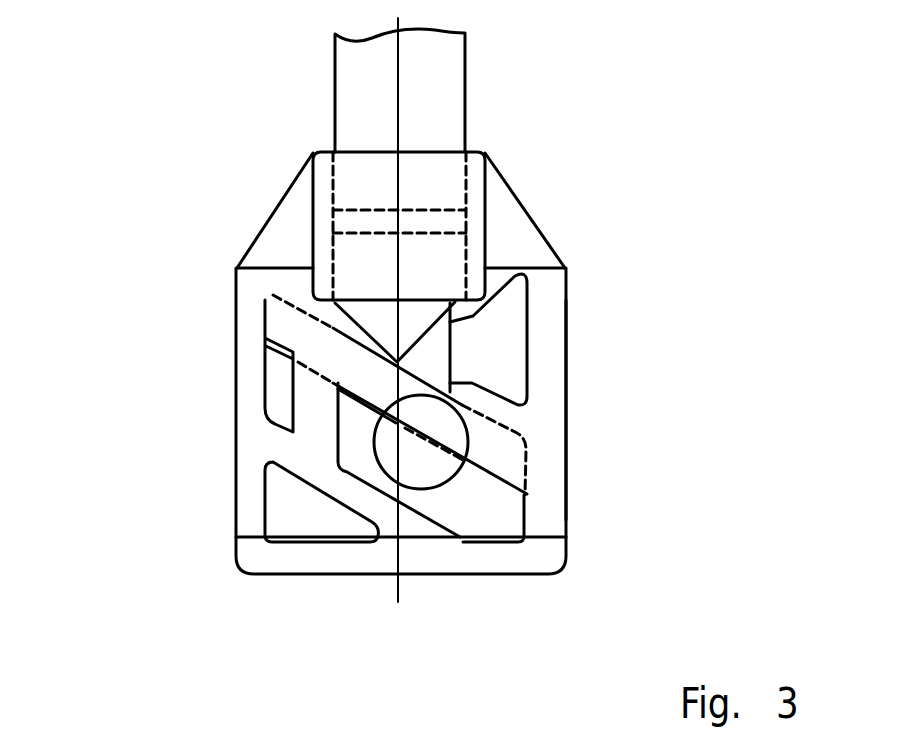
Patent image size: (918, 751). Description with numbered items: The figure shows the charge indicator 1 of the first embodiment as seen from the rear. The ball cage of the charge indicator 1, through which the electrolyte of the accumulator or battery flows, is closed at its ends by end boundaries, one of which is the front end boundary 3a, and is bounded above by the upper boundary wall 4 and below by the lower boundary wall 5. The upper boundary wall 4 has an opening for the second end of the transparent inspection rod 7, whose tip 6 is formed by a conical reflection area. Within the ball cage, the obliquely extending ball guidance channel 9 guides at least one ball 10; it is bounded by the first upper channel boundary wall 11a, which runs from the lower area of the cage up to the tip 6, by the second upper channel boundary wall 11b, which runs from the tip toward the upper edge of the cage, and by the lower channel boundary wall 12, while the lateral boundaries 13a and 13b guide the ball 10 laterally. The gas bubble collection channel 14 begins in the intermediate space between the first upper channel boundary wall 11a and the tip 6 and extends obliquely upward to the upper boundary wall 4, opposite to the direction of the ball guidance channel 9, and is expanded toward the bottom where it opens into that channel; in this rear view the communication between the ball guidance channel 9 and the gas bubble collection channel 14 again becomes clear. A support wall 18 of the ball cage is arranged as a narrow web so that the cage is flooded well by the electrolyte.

The charge indicator 1 is at (135, 408).
The front end boundary 3a is at (540, 402).
The upper boundary wall 4 is at (533, 268).
The lower boundary wall 5 is at (426, 578).
The tip 6 is at (397, 349).
The inspection rod 7 is at (447, 113).
The ball guidance channel 9 is at (477, 527).
The ball 10 is at (478, 488).
The first upper channel boundary wall 11a is at (490, 406).
The second upper channel boundary wall 11b is at (335, 318).
The lower channel boundary wall 12 is at (307, 462).
The lateral boundary 13a is at (310, 344).
The lateral boundary 13b is at (415, 478).
The gas bubble collection channel 14 is at (510, 350).
The support wall 18 is at (450, 360).